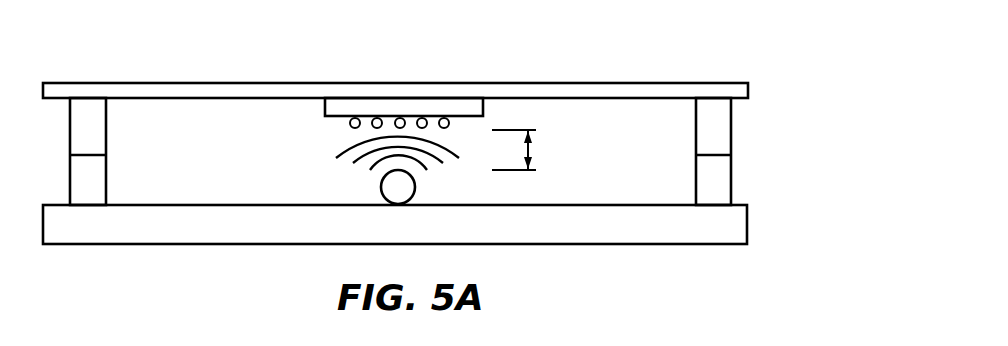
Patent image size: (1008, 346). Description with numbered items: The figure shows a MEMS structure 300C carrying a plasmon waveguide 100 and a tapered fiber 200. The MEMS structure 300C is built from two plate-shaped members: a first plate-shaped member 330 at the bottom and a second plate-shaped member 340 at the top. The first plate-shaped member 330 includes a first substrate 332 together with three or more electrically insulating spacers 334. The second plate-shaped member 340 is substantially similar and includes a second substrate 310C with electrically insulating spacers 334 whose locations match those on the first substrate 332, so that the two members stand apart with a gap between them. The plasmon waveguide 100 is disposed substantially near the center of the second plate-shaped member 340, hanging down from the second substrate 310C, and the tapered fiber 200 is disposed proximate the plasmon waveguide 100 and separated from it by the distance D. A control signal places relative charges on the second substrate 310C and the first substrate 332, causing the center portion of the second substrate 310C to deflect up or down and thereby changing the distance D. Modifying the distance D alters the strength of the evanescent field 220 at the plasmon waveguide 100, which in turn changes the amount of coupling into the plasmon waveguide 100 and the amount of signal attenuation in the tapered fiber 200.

The MEMS structure 300C is at (467, 138).
The second plate-shaped member 340 is at (467, 144).
The second substrate 310C is at (748, 92).
The electrically insulating spacers 334 is at (731, 118).
The first plate-shaped member 330 is at (467, 213).
The first substrate 332 is at (747, 215).
The plasmon waveguide 100 is at (325, 108).
The evanescent field 220 is at (457, 157).
The tapered fiber 200 is at (415, 187).
The distance D is at (531, 153).